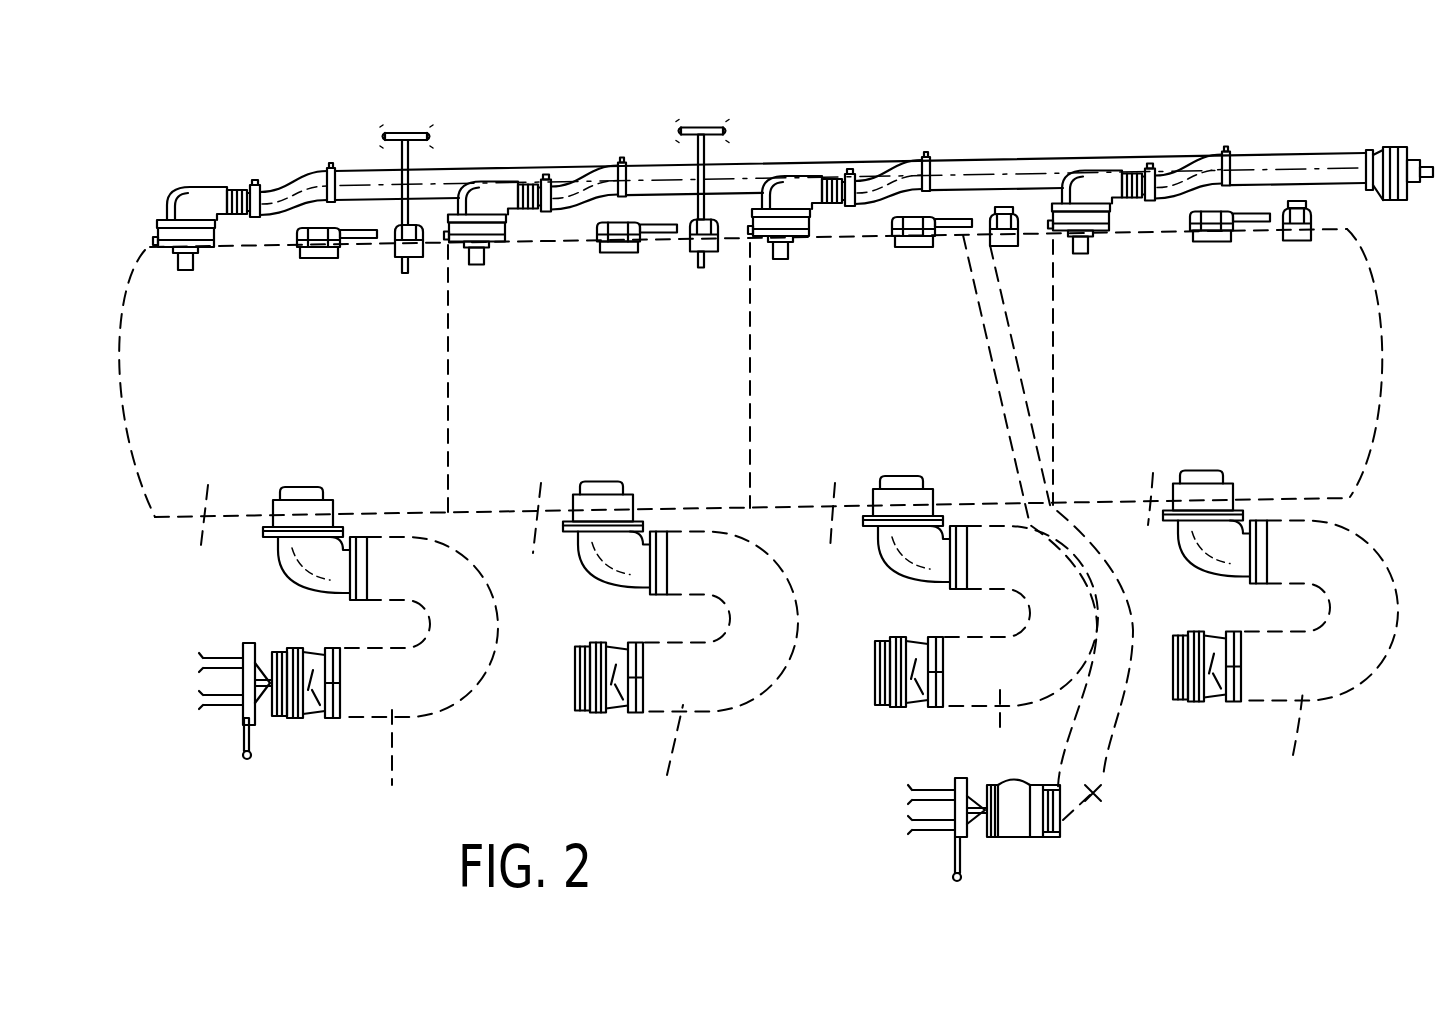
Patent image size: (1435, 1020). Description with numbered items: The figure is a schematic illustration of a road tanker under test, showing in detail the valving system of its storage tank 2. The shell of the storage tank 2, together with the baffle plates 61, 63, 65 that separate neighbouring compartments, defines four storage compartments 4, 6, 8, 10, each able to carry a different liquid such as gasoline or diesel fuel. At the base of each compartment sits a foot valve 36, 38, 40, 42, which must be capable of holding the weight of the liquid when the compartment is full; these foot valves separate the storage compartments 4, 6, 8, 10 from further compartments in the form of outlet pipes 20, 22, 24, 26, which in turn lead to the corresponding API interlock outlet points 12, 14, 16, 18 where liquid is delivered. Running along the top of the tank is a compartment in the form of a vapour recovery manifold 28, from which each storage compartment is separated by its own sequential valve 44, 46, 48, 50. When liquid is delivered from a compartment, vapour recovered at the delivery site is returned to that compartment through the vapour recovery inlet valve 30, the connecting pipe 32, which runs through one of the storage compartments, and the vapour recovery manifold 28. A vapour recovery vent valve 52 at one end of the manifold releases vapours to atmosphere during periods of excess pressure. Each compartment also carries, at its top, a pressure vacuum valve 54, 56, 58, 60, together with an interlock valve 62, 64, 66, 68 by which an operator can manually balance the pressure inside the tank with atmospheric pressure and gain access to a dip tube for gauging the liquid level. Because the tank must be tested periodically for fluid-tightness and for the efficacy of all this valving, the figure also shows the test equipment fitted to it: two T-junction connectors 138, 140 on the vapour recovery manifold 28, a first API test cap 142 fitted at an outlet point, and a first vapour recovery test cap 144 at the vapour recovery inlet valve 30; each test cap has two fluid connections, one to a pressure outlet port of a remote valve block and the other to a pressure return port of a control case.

The storage tank 2 is at (793, 118).
The storage compartment 4 is at (200, 543).
The storage compartment 6 is at (540, 545).
The storage compartment 8 is at (832, 547).
The storage compartment 10 is at (1157, 533).
The API interlock outlet point 12 is at (293, 717).
The API interlock outlet point 14 is at (592, 714).
The API interlock outlet point 16 is at (887, 708).
The API interlock outlet point 18 is at (1187, 703).
The outlet pipe 20 is at (392, 785).
The outlet pipe 22 is at (667, 780).
The outlet pipe 24 is at (1000, 735).
The outlet pipe 26 is at (1293, 753).
The vapour recovery manifold 28 is at (1036, 173).
The vapour recovery inlet valve 30 is at (1015, 830).
The connecting pipe 32 is at (1110, 823).
The foot valve 36 is at (290, 496).
The foot valve 38 is at (600, 487).
The foot valve 40 is at (900, 483).
The foot valve 42 is at (1195, 477).
The sequential valve 44 is at (168, 248).
The sequential valve 46 is at (460, 253).
The sequential valve 48 is at (763, 250).
The sequential valve 50 is at (1057, 232).
The vapour recovery vent valve 52 is at (1390, 150).
The pressure vacuum valve 54 is at (318, 258).
The pressure vacuum valve 56 is at (604, 256).
The pressure vacuum valve 58 is at (907, 248).
The pressure vacuum valve 60 is at (1215, 243).
The baffle plate 61 is at (448, 388).
The interlock valve 62 is at (413, 272).
The baffle plate 63 is at (750, 383).
The interlock valve 64 is at (700, 267).
The baffle plate 65 is at (1057, 400).
The interlock valve 66 is at (995, 248).
The interlock valve 68 is at (1295, 241).
The T-junction connector 138 is at (402, 133).
The T-junction connector 140 is at (697, 134).
The first API test cap 142 is at (238, 712).
The first vapour recovery test cap 144 is at (957, 832).